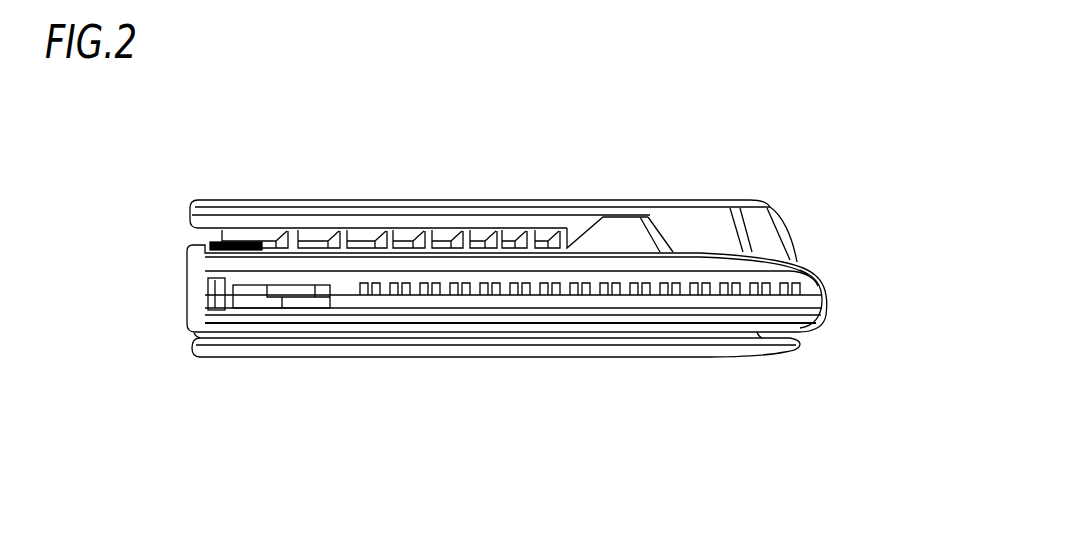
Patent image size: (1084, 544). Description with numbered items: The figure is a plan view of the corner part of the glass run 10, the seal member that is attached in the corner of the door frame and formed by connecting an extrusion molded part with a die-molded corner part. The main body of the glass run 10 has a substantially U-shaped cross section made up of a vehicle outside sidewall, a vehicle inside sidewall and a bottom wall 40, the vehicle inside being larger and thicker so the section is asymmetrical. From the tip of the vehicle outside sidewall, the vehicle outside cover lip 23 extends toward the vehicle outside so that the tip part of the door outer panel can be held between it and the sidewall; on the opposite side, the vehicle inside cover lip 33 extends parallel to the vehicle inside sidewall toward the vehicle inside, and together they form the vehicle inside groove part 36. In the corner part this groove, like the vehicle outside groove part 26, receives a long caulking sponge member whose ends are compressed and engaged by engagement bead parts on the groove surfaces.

The glass run 10 is at (408, 365).
The vehicle inside cover lip 33 is at (482, 200).
The vehicle inside groove part 36 is at (207, 235).
The bottom wall 40 is at (205, 295).
The vehicle outside cover lip 23 is at (673, 355).
The vehicle outside groove part 26 is at (193, 340).